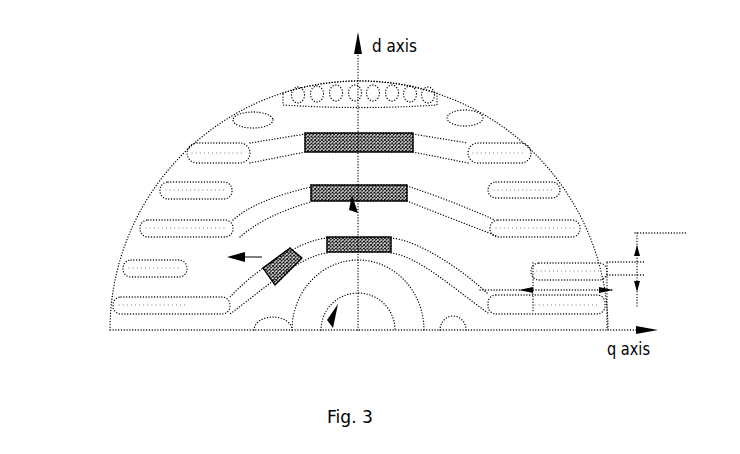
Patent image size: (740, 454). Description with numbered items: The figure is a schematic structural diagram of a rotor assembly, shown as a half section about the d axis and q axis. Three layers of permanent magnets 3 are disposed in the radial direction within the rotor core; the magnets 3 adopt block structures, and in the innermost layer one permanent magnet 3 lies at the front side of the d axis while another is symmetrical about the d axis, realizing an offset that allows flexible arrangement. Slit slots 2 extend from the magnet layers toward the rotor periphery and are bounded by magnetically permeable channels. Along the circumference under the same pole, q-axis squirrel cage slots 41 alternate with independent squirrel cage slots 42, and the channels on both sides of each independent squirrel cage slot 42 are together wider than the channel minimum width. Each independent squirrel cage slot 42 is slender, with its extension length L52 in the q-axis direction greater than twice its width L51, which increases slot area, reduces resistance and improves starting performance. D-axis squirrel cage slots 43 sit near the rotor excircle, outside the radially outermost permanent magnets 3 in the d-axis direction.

The q-axis squirrel cage slot 41 is at (110, 320).
The independent squirrel cage slot 42 is at (190, 188).
The d-axis squirrel cage slot 43 is at (333, 92).
The permanent magnet 3 is at (397, 143).
The slit slot 2 is at (470, 217).
The width of the independent squirrel cage slot L51 is at (583, 256).
The extension length of the independent squirrel cage slot in the q-axis direction L52 is at (546, 294).